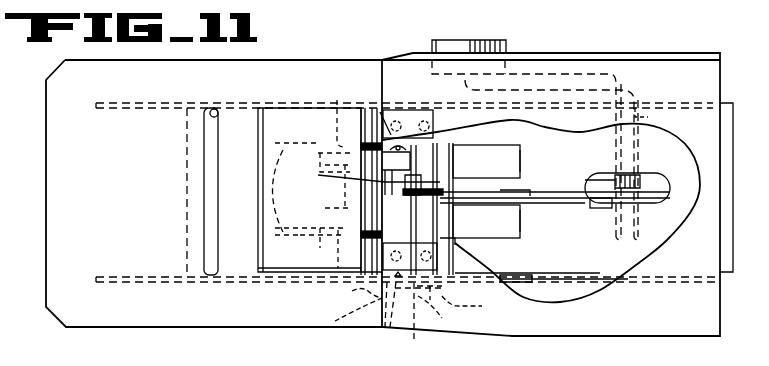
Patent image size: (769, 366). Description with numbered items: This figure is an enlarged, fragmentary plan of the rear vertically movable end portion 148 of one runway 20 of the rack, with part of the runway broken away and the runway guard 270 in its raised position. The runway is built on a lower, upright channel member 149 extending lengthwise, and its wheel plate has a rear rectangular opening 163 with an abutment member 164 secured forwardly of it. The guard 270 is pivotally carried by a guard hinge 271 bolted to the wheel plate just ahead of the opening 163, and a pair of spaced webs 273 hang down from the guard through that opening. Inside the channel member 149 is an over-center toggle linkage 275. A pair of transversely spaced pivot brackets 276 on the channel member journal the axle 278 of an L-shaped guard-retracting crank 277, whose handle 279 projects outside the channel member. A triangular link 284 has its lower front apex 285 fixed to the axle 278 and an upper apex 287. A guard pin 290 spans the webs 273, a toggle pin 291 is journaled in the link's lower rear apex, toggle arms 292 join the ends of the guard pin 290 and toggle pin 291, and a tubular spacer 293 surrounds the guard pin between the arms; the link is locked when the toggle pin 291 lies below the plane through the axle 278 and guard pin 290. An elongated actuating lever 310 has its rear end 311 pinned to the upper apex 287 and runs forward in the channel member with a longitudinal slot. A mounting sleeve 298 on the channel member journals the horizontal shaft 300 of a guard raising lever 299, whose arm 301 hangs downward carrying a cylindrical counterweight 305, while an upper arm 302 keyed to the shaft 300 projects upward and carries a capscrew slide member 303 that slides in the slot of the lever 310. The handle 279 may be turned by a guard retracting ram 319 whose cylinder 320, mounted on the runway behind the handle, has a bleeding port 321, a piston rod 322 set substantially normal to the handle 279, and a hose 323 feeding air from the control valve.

The runway 20 is at (679, 78).
The rear vertically movable end portion 148 is at (114, 200).
The channel member 149 is at (733, 272).
The opening 163 is at (218, 112).
The abutment member 164 is at (390, 113).
The runway guard 270 is at (270, 110).
The guard hinge 271 is at (362, 237).
The web 273 is at (284, 191).
The toggle linkage 275 is at (418, 150).
The pivot bracket 276 is at (470, 157).
The guard-retracting crank 277 is at (456, 291).
The axle 278 is at (462, 243).
The handle 279 is at (480, 308).
The triangular link 284 is at (486, 161).
The lower front apex 285 is at (513, 190).
The upper apex 287 is at (358, 173).
The guard pin 290 is at (339, 110).
The toggle pin 291 is at (403, 153).
The toggle arm 292 is at (312, 148).
The tubular spacer 293 is at (326, 208).
The mounting sleeve 298 is at (646, 160).
The guard raising lever 299 is at (625, 72).
The horizontal shaft 300 is at (663, 118).
The arm 301 is at (525, 72).
The upper arm 302 is at (607, 173).
The capscrew slide member 303 is at (600, 210).
The counterweight 305 is at (440, 40).
The actuating lever 310 is at (553, 192).
The rear end 311 is at (486, 221).
The guard retracting ram 319 is at (409, 308).
The cylinder 320 is at (335, 321).
The bleeding port 321 is at (386, 330).
The piston rod 322 is at (444, 314).
The hose 323 is at (360, 298).